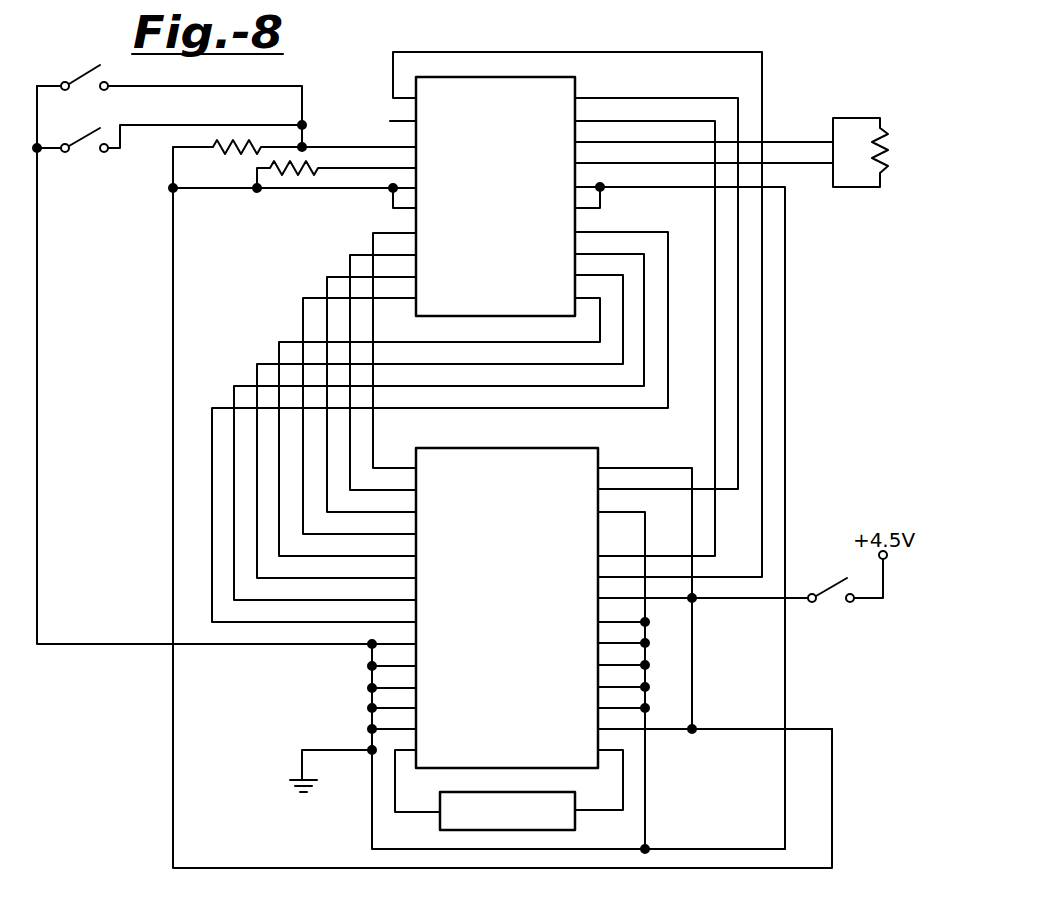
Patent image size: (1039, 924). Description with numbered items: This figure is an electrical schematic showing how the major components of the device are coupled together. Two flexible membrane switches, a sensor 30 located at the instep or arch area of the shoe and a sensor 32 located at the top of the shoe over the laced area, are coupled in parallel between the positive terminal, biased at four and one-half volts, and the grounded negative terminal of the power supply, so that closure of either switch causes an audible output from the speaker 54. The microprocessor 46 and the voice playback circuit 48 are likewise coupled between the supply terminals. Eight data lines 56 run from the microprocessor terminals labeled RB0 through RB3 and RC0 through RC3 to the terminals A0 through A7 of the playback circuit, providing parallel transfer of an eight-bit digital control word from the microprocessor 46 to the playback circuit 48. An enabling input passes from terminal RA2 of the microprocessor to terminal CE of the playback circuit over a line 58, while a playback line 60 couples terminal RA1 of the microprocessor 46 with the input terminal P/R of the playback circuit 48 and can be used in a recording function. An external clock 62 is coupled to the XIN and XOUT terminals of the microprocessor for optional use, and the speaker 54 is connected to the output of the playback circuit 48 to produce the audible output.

The sensor 30 is at (64, 82).
The sensor 32 is at (65, 152).
The microprocessor 46 is at (575, 77).
The voice playback circuit 48 is at (567, 448).
The speaker 54 is at (576, 826).
The data lines 56 is at (302, 326).
The line 58 is at (710, 52).
The playback line 60 is at (740, 318).
The external clock 62 is at (792, 142).